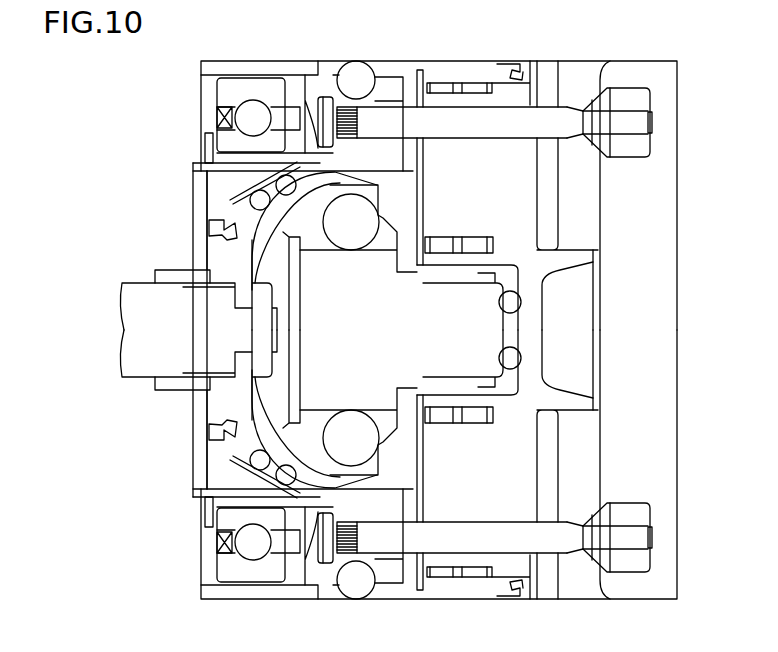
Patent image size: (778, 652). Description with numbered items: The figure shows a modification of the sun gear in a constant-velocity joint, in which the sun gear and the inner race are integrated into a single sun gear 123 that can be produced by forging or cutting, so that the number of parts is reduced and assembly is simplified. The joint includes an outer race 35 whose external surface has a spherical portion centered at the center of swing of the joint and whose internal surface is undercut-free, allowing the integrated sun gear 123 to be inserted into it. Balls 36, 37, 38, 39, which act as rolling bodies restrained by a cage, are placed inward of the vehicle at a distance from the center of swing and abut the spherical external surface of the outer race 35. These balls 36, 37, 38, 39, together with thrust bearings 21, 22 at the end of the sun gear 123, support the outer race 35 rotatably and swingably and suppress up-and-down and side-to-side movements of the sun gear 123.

The thrust bearing 21 is at (521, 302).
The thrust bearing 22 is at (521, 358).
The outer race 35 is at (218, 396).
The ball 36 is at (250, 198).
The ball 37 is at (276, 183).
The ball 38 is at (252, 461).
The ball 39 is at (276, 478).
The sun gear 123 is at (445, 375).